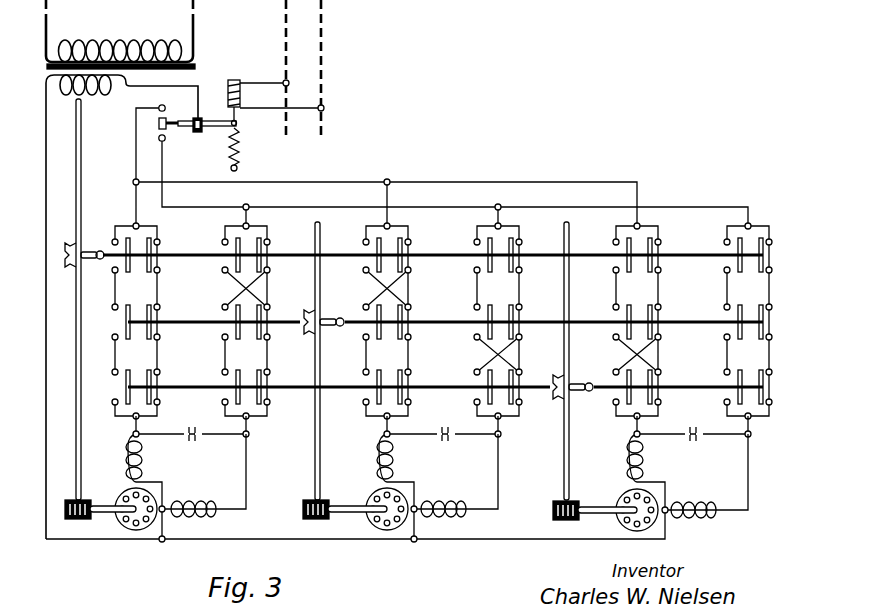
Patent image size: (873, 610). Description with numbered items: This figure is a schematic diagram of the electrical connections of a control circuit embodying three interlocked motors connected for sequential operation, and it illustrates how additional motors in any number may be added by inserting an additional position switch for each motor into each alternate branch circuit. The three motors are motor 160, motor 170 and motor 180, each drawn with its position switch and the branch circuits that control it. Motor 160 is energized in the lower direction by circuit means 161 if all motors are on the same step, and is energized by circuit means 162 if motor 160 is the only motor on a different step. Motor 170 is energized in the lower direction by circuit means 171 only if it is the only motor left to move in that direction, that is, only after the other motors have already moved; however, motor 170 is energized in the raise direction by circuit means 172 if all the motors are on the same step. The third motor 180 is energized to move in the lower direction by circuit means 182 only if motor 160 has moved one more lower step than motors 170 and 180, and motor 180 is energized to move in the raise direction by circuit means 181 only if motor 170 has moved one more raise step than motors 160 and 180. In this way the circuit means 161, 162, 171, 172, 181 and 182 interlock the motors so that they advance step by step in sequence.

The motor 160 is at (612, 497).
The circuit means 161 is at (750, 220).
The circuit means 162 is at (640, 222).
The motor 170 is at (115, 493).
The circuit means 171 is at (250, 216).
The circuit means 172 is at (134, 212).
The motor 180 is at (361, 497).
The circuit means 181 is at (390, 216).
The circuit means 182 is at (500, 214).